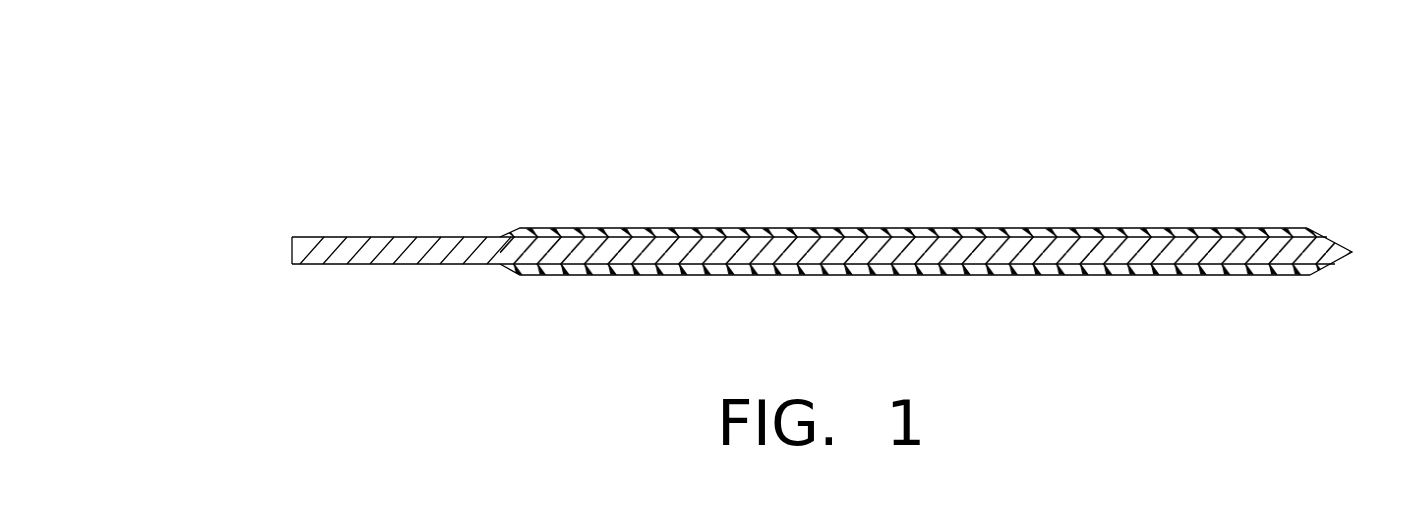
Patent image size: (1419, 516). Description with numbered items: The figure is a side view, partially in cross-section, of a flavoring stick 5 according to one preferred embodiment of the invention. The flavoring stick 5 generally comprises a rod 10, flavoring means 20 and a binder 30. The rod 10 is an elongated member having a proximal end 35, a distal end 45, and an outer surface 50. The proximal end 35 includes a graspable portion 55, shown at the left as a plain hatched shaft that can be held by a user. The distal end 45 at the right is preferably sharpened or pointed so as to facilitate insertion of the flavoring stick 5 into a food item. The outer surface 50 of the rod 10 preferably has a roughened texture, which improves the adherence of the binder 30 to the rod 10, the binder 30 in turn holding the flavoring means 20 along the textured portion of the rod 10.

The flavoring stick 5 is at (983, 132).
The rod 10 is at (826, 216).
The flavoring means 20 is at (617, 205).
The binder 30 is at (1184, 208).
The distal end 45 is at (1352, 225).
The proximal end 35 is at (274, 276).
The outer surface 50 is at (977, 280).
The graspable portion 55 is at (405, 258).